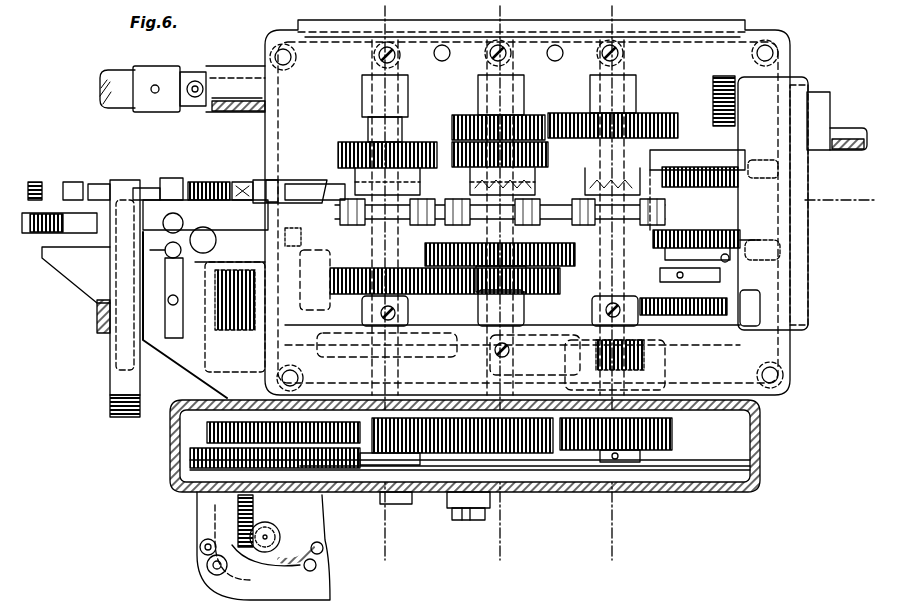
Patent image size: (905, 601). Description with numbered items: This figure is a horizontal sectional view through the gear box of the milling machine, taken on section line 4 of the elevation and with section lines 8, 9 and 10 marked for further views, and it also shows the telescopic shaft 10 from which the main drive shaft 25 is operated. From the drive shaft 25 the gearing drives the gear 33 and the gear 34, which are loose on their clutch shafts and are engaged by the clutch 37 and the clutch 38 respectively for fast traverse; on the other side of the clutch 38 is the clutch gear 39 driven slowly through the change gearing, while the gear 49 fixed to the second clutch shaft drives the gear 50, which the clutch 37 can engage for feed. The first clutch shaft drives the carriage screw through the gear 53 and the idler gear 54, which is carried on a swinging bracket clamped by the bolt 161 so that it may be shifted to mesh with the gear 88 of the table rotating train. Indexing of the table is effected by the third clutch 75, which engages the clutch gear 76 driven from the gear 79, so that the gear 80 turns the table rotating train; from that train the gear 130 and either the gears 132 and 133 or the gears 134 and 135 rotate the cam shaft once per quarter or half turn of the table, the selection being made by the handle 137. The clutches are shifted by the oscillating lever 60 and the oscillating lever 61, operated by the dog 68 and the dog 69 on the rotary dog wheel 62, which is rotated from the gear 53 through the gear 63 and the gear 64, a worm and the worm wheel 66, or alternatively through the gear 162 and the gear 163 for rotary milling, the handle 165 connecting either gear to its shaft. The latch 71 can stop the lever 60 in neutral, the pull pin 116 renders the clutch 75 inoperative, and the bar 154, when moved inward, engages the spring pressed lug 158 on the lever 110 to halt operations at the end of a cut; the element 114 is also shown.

The section line 4- 4 is at (17, 212).
The section line 8- 8 is at (385, 20).
The section line 9- 9 is at (498, 20).
The telescopic shaft 10 is at (113, 72).
The main drive shaft 25 is at (238, 72).
The gear 33 is at (355, 142).
The gear 34 is at (452, 147).
The clutch 37 is at (350, 193).
The clutch 38 is at (470, 192).
The clutch gear 39 is at (570, 264).
The gear 49 is at (527, 303).
The gear 50 is at (347, 270).
The gear 53 is at (376, 504).
The idler gear 54 is at (510, 418).
The oscillating lever 60 is at (165, 178).
The oscillating lever 61 is at (80, 182).
The rotary dog wheel 62 is at (110, 408).
The gear 63 is at (318, 345).
The gear 64 is at (207, 430).
The worm wheel 66 is at (255, 272).
The dog 68 is at (148, 196).
The dog 69 is at (107, 184).
The latch 71 is at (167, 282).
The clutch 75 is at (585, 192).
The clutch gear 76 is at (657, 114).
The gear 79 is at (530, 116).
The gear 80 is at (644, 350).
The gear 88 is at (672, 433).
The lever 110 is at (220, 182).
The nut 114 is at (35, 182).
The pull pin 116 is at (243, 182).
The gear 130 is at (705, 315).
The gear 132 is at (656, 240).
The gear 133 is at (762, 242).
The gear 134 is at (678, 167).
The gear 135 is at (738, 200).
The handle 137 is at (843, 128).
The bar 154 is at (275, 182).
The spring pressed lug 158 is at (300, 230).
The bolt 161 is at (466, 521).
The gear 162 is at (355, 497).
The gear 163 is at (175, 472).
The handle 165 is at (200, 563).